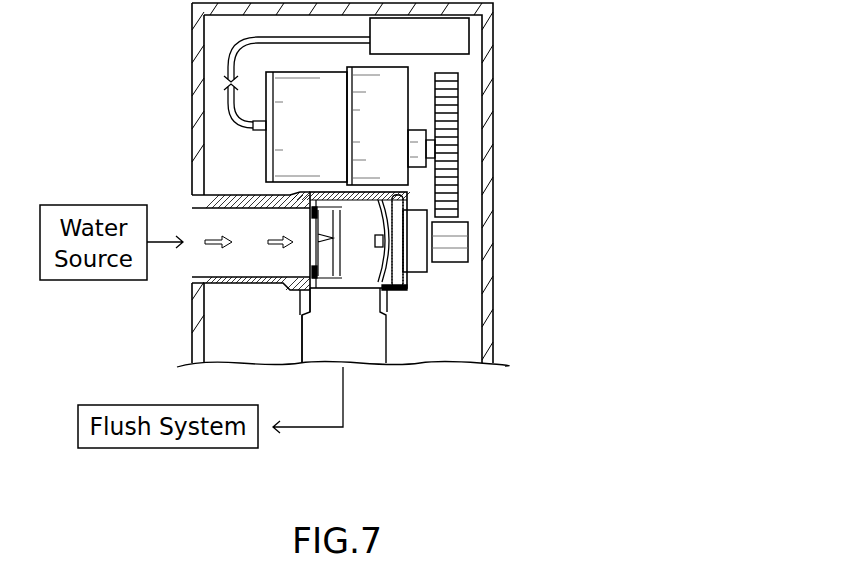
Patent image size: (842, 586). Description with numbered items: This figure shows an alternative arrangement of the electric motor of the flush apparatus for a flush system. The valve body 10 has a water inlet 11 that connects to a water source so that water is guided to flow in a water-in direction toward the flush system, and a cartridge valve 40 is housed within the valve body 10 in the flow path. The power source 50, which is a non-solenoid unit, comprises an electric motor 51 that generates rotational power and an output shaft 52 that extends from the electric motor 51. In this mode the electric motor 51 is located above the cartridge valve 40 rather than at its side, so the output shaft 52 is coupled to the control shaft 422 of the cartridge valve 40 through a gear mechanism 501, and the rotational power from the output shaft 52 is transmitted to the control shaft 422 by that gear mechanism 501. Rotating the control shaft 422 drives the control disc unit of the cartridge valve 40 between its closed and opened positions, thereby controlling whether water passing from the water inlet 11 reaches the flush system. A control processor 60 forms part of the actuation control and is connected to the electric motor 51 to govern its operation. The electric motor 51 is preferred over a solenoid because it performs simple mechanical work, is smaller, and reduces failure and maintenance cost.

The valve body 10 is at (127, 138).
The water inlet 11 is at (213, 199).
The cartridge valve 40 is at (358, 263).
The power source 50 is at (623, 125).
The electric motor 51 is at (327, 138).
The output shaft 52 is at (430, 142).
The control processor 60 is at (346, 74).
The control shaft 422 is at (453, 242).
The gear mechanism 501 is at (450, 150).